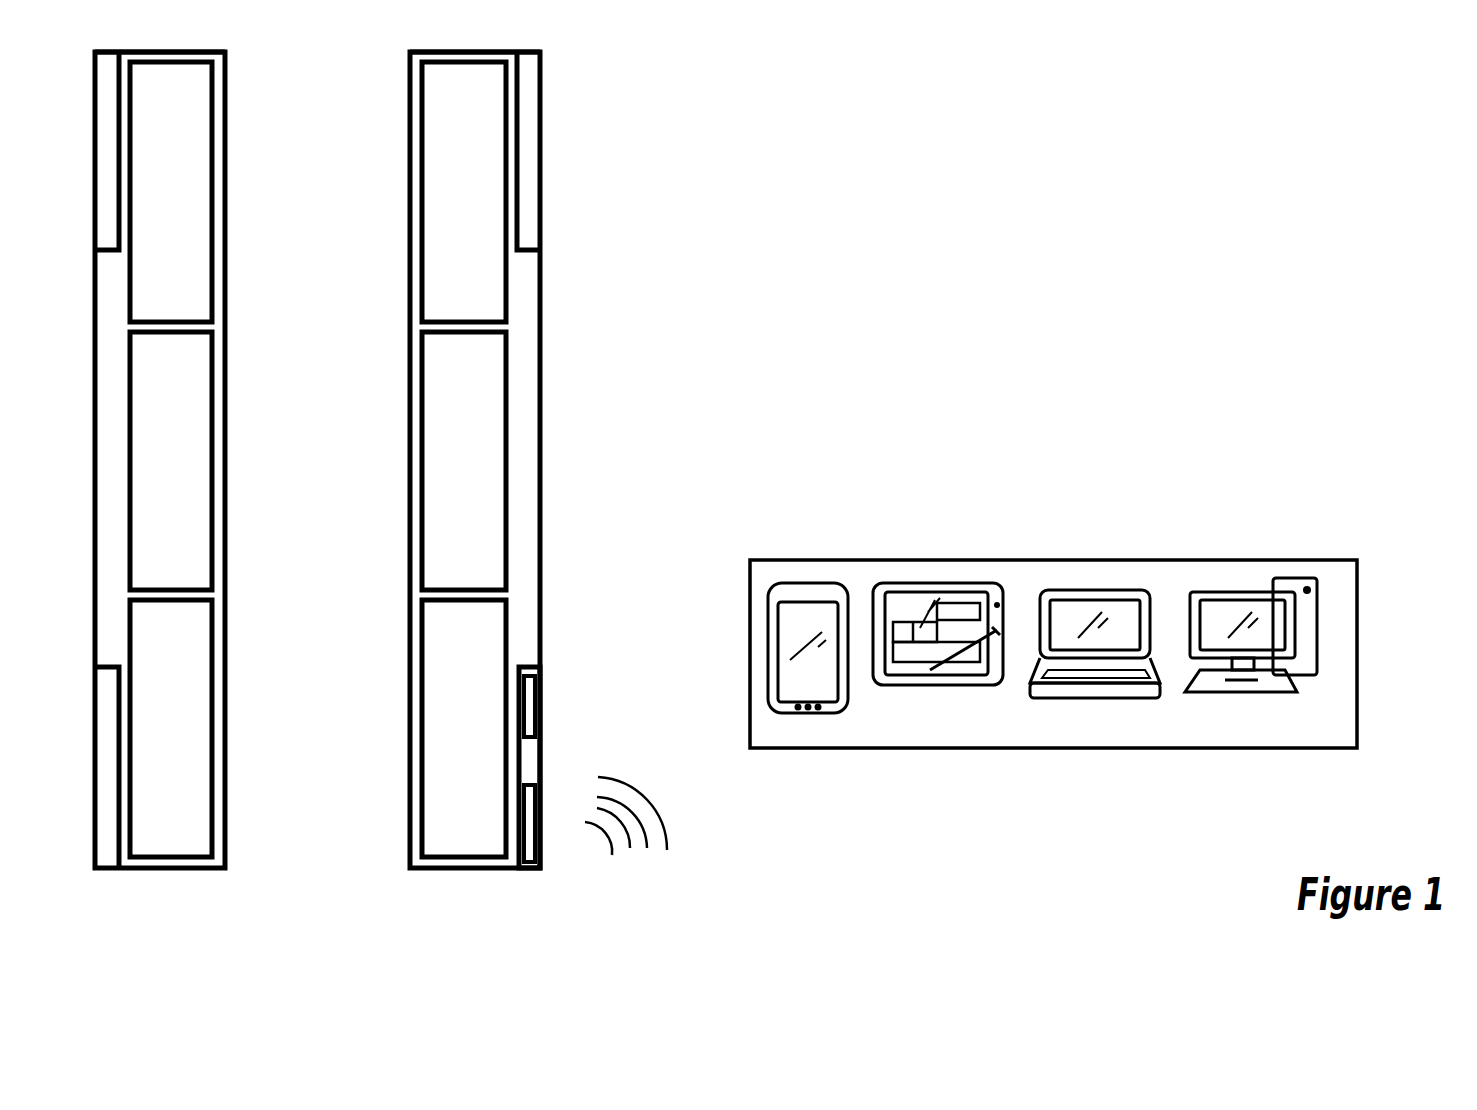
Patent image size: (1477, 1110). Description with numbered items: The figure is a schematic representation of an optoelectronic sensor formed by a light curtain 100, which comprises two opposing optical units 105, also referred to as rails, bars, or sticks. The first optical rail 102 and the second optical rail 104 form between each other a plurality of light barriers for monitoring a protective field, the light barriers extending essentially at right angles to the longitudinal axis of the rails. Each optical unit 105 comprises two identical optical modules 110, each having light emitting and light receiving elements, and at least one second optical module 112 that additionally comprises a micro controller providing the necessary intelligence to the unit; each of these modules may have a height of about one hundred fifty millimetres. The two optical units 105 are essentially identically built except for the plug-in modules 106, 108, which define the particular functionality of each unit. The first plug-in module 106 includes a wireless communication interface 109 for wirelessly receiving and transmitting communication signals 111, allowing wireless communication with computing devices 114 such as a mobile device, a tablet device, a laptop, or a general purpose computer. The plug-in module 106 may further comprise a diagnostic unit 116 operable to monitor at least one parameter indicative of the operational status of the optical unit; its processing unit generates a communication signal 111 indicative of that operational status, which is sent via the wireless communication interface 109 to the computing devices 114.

The light curtain 100 is at (596, 110).
The first optical rail 102 is at (225, 182).
The second optical rail 104 is at (540, 315).
The optical unit 105 is at (410, 50).
The first plug-in module 106 is at (527, 665).
The plug-in module 108 is at (540, 205).
The wireless communication interface 109 is at (530, 798).
The optical module 110 is at (442, 285).
The communication signal 111 is at (665, 820).
The second optical module 112 is at (448, 745).
The computing device 114 is at (1040, 560).
The diagnostic unit 116 is at (535, 715).